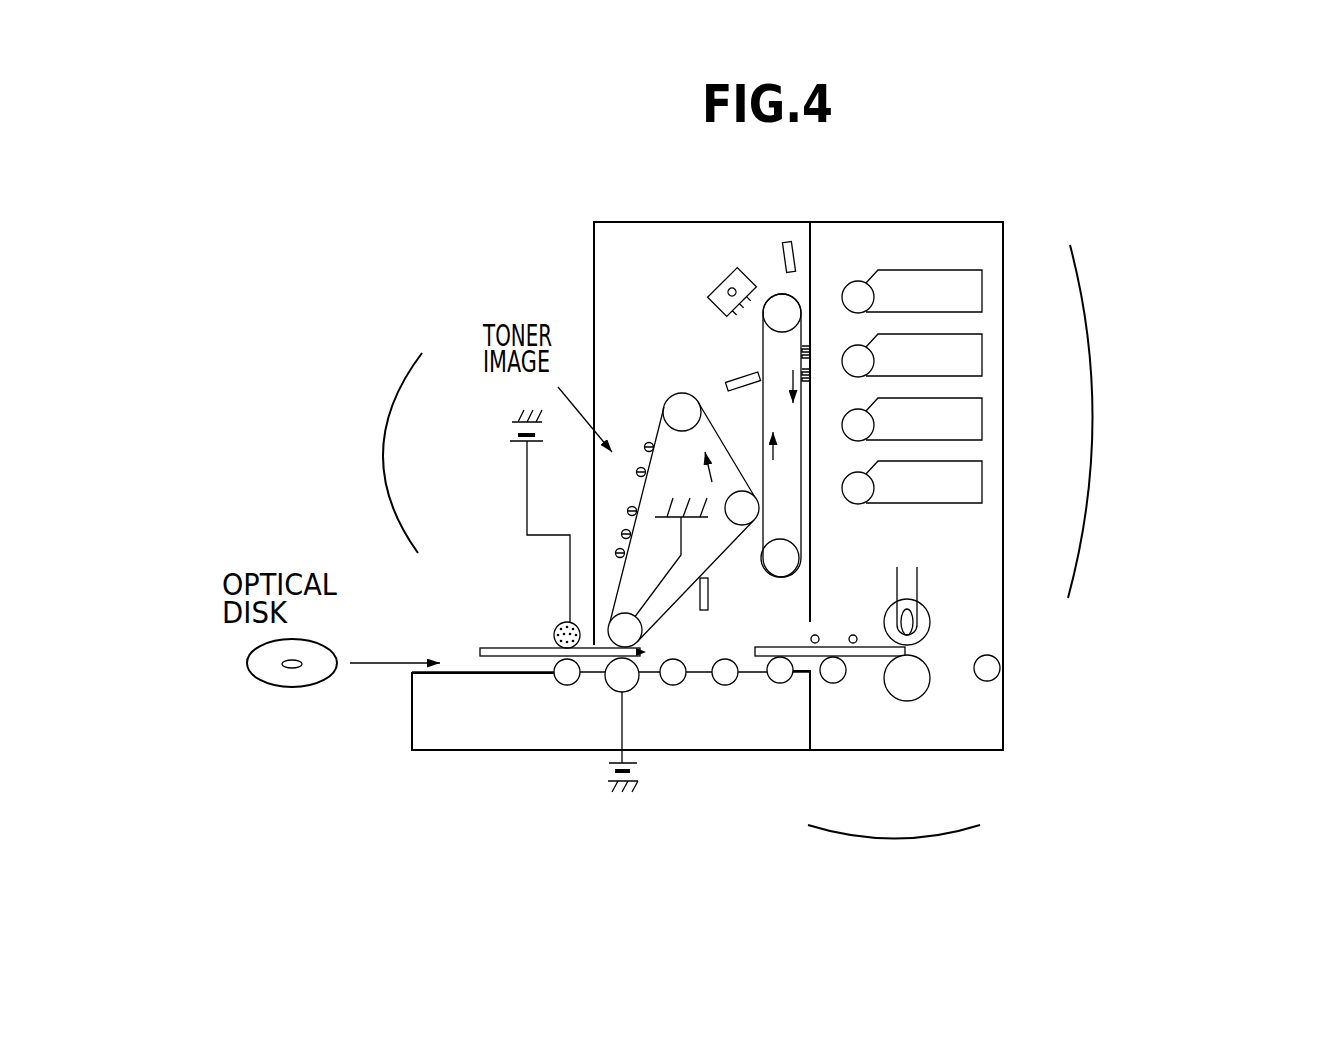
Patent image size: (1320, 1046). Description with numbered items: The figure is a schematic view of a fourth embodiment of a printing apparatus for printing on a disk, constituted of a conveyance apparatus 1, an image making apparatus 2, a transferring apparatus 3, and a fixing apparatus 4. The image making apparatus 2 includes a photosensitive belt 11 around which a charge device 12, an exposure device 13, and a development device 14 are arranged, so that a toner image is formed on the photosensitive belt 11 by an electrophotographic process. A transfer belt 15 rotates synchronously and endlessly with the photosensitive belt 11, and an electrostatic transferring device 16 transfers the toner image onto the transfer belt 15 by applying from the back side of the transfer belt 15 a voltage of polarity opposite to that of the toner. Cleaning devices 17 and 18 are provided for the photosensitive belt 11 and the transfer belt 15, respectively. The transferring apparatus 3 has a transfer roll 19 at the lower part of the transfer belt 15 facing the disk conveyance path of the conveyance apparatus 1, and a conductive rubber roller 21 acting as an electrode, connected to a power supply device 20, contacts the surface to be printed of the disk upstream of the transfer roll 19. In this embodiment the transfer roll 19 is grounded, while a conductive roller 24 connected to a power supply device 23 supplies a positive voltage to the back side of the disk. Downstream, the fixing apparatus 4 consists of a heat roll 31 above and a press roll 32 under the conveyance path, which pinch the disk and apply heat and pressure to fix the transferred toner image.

The conveyance apparatus 1 is at (745, 762).
The image making apparatus 2 is at (1181, 421).
The transferring apparatus 3 is at (289, 453).
The fixing apparatus 4 is at (971, 851).
The photosensitive belt 11 is at (822, 526).
The charge device 12 is at (707, 283).
The exposure device 13 is at (782, 246).
The development device 14 is at (914, 267).
The transfer belt 15 is at (650, 412).
The electrostatic transferring device 16 is at (742, 537).
The cleaning device 17 is at (738, 374).
The cleaning device 18 is at (716, 616).
The transfer roll 19 is at (641, 668).
The power supply device 20 is at (510, 428).
The conductive rubber roller 21 is at (555, 624).
The power supply device 23 is at (606, 766).
The conductive roller 24 is at (606, 684).
The heat roll 31 is at (933, 620).
The press roll 32 is at (910, 704).